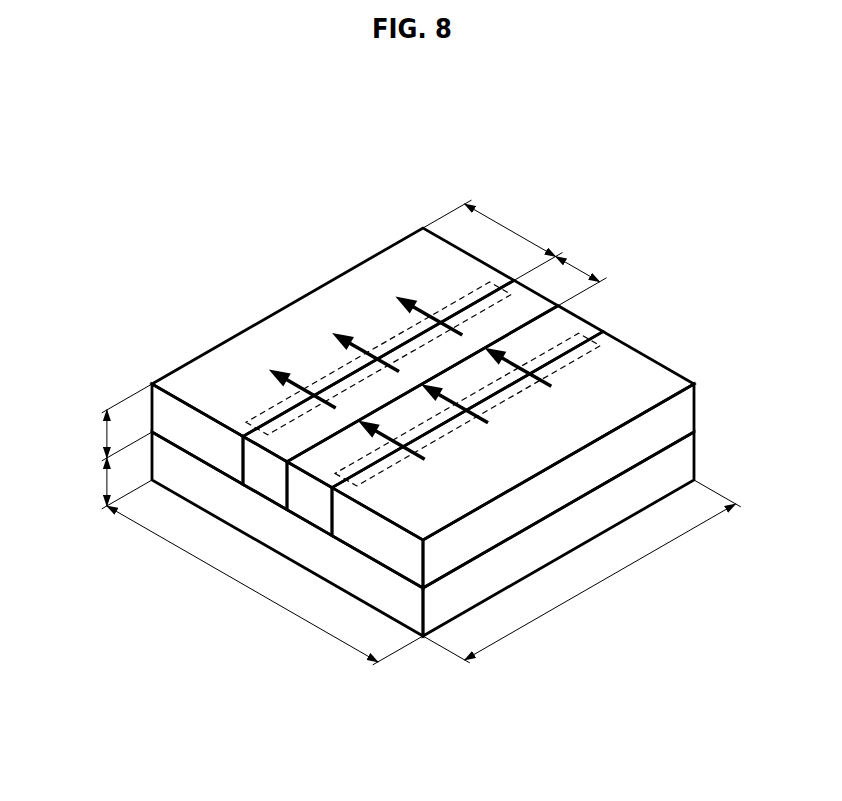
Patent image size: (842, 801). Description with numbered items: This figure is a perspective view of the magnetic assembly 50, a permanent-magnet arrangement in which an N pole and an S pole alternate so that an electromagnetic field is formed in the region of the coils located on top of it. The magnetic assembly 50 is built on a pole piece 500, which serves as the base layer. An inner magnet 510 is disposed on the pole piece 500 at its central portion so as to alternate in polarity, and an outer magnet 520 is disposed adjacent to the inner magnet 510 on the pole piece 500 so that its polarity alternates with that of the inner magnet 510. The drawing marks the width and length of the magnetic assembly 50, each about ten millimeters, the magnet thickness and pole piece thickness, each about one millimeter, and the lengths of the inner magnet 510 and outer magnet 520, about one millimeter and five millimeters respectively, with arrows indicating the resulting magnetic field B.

The magnetic assembly 50 is at (418, 113).
The pole piece 500 is at (342, 568).
The inner magnet 510 is at (568, 323).
The outer magnet 520 is at (637, 377).